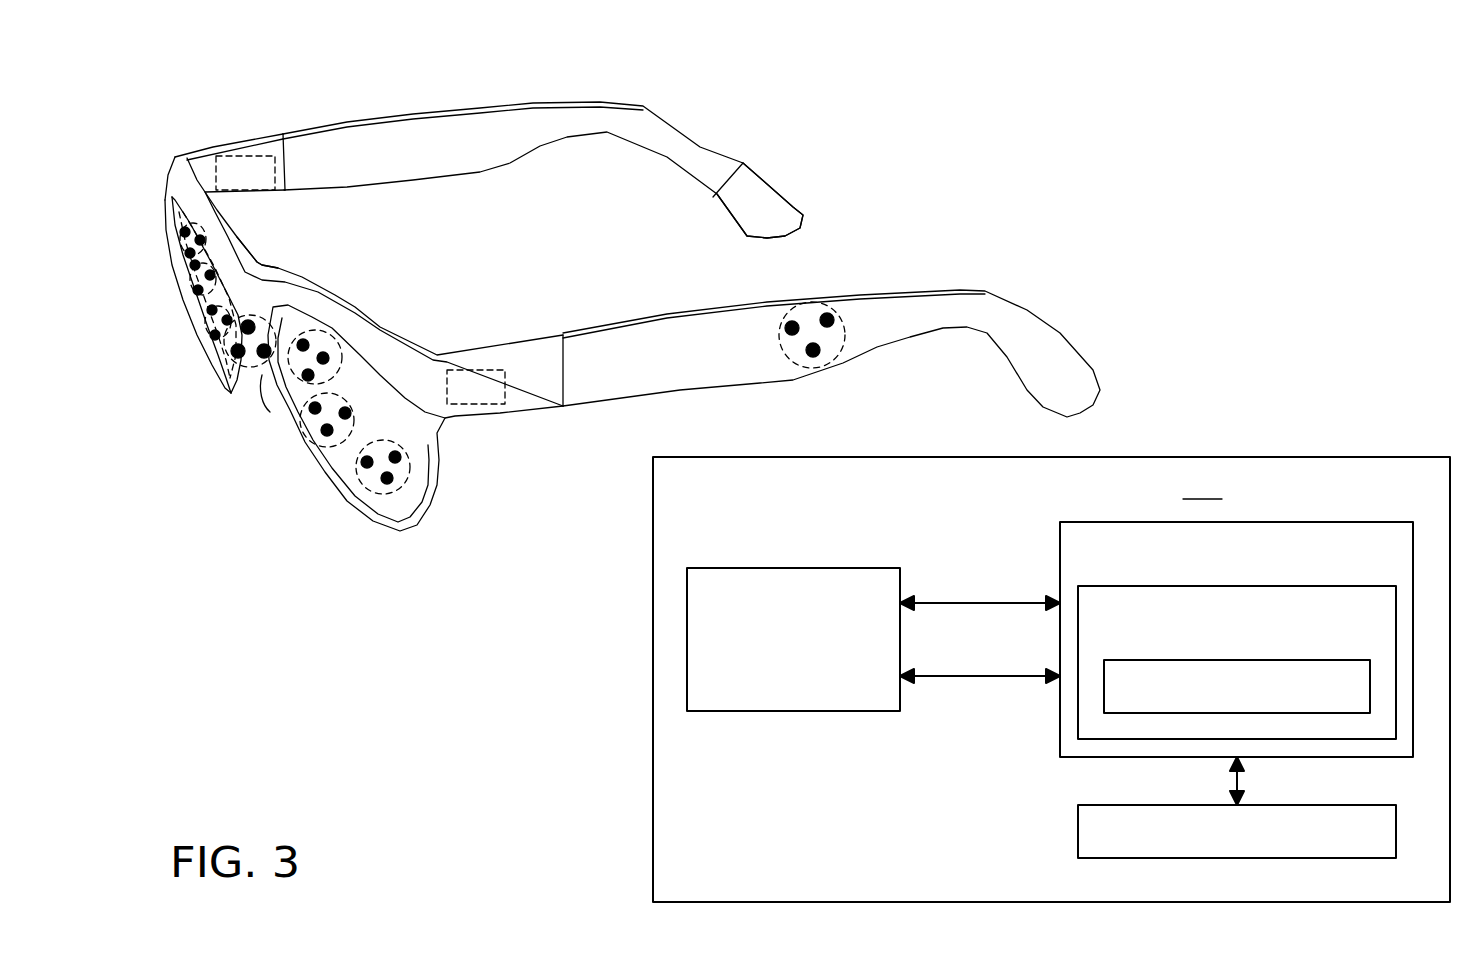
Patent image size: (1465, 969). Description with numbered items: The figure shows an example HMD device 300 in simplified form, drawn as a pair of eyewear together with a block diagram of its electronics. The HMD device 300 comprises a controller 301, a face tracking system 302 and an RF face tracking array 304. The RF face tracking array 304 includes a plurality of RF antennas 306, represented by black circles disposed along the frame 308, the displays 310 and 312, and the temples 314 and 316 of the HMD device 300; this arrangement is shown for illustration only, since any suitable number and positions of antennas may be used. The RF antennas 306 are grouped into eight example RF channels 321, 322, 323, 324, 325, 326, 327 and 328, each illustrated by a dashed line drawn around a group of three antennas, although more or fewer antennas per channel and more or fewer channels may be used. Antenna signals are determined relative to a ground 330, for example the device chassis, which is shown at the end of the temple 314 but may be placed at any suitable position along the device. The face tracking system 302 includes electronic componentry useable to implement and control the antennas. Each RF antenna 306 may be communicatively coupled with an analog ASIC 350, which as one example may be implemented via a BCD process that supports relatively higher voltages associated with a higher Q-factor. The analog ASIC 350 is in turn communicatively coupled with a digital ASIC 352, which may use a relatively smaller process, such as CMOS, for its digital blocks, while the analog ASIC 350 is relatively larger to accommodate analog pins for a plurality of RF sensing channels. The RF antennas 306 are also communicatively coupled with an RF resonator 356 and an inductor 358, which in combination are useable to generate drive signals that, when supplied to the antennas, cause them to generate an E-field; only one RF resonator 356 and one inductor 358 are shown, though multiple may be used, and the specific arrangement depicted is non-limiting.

The HMD device 300 is at (197, 94).
The controller 301 is at (265, 184).
The face tracking system 302 is at (653, 902).
The RF face tracking array 304 is at (377, 216).
The RF antennas 306 is at (408, 280).
The frame 308 is at (264, 265).
The display 310 is at (170, 202).
The display 312 is at (327, 487).
The temple 314 is at (396, 164).
The temple 316 is at (740, 361).
The RF channel 321 is at (178, 244).
The RF channel 322 is at (190, 279).
The RF channel 323 is at (203, 327).
The RF channel 324 is at (340, 356).
The RF channel 325 is at (327, 447).
The RF channel 326 is at (390, 497).
The RF channel 327 is at (253, 373).
The RF channel 328 is at (818, 365).
The ground 330 is at (777, 221).
The analog ASIC 350 is at (1342, 562).
The digital ASIC 352 is at (813, 667).
The RF resonator 356 is at (1353, 637).
The inductor 358 is at (1323, 701).